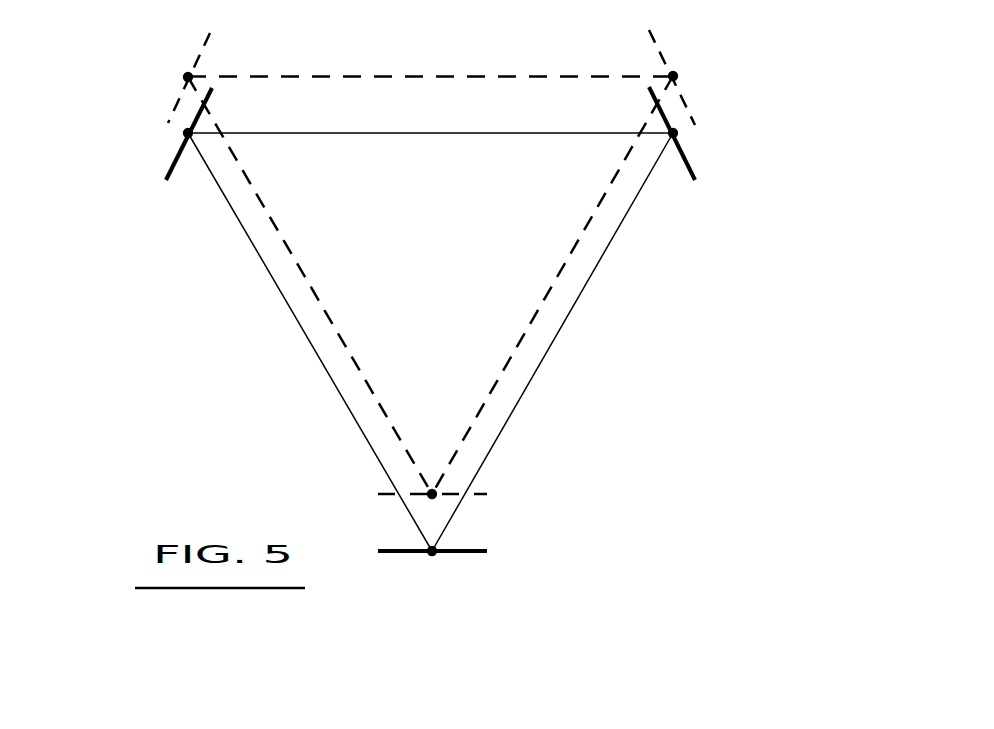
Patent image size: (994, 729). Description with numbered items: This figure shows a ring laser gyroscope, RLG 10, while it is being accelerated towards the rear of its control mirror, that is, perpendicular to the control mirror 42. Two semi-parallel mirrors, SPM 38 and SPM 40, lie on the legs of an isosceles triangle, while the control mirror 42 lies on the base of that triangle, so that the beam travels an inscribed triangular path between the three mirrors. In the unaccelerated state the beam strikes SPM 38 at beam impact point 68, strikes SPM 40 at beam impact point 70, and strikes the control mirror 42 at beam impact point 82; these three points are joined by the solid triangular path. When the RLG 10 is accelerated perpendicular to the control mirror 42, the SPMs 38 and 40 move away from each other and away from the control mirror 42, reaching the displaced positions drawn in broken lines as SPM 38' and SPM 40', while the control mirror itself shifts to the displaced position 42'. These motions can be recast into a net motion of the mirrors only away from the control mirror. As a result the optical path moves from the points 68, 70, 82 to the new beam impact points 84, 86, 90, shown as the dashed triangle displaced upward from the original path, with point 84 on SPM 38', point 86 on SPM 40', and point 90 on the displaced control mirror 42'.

The RLG 10 is at (567, 360).
The SPM 38 is at (171, 173).
The SPM in displaced position 38' is at (155, 79).
The SPM 40 is at (700, 133).
The SPM in displaced position 40' is at (709, 77).
The control mirror 42 is at (456, 593).
The control mirror in displaced position 42' is at (495, 525).
The beam impact point 68 is at (188, 133).
The beam impact point 70 is at (673, 135).
The beam impact point 82 is at (432, 554).
The displaced beam impact point 84 is at (188, 76).
The displaced beam impact point 86 is at (673, 76).
The displaced beam impact point 90 is at (432, 486).